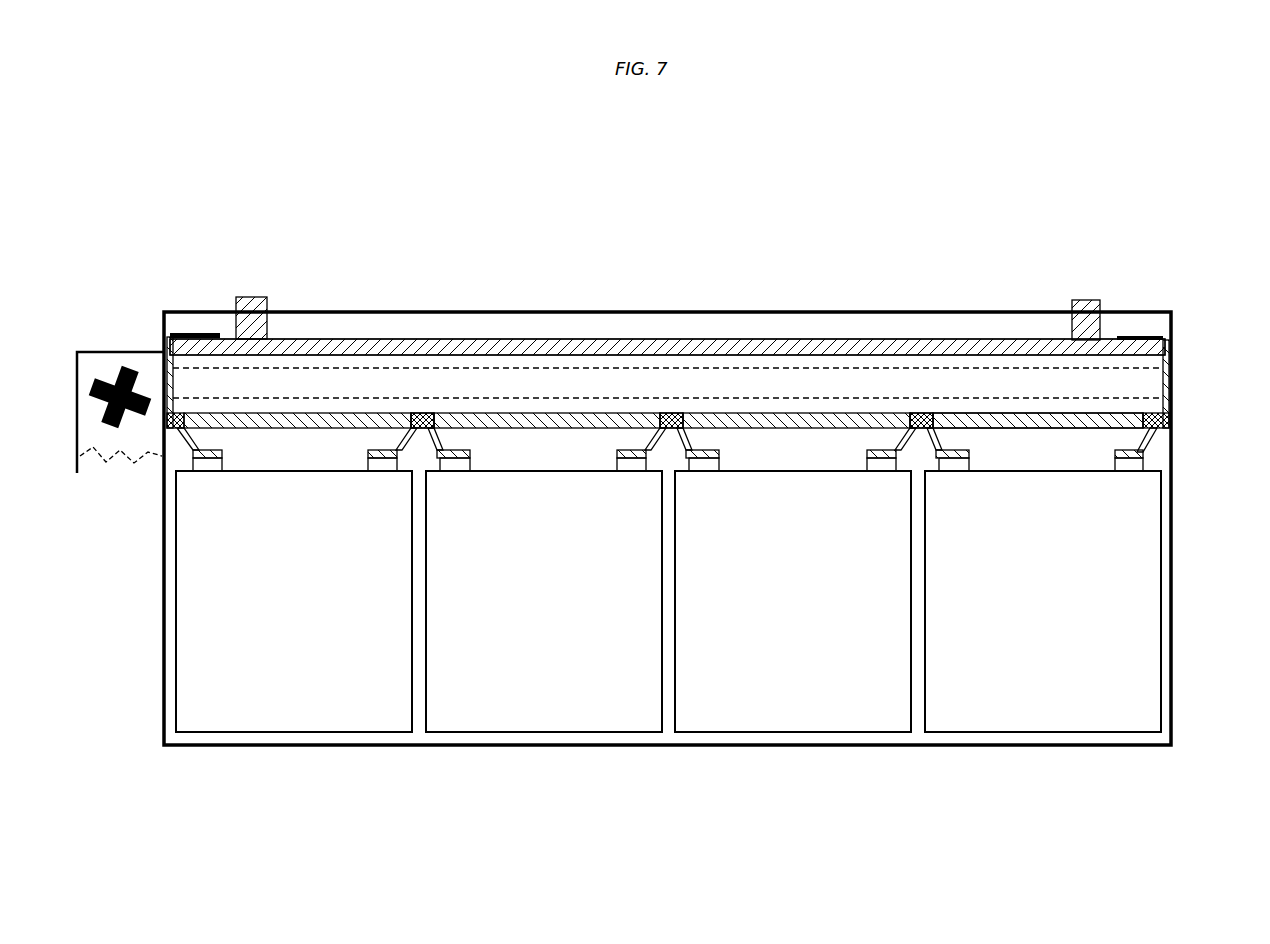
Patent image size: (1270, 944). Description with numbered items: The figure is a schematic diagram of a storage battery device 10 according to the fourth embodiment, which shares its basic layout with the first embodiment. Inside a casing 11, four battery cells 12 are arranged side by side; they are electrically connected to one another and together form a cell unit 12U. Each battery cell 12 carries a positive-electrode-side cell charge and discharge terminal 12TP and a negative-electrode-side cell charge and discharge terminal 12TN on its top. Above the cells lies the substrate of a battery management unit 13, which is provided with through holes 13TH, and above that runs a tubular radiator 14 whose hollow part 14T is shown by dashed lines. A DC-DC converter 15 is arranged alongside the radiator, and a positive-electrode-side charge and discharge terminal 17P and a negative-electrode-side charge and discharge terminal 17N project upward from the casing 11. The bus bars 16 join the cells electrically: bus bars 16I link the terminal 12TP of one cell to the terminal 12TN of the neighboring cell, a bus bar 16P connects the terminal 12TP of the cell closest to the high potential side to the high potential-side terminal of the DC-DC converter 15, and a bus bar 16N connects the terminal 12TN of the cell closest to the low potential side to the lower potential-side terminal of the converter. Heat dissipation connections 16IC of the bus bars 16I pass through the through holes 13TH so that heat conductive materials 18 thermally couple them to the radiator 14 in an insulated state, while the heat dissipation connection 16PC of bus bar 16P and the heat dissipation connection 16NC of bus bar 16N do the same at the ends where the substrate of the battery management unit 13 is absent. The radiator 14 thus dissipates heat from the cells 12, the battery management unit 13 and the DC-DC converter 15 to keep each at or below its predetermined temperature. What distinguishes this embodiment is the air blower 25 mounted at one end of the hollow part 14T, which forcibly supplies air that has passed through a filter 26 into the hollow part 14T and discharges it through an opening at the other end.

The storage battery device 10 is at (670, 174).
The casing 11 is at (605, 312).
The battery cells 12 is at (293, 710).
The positive-electrode-side cell charge and discharge terminal 12TP is at (217, 462).
The negative-electrode-side cell charge and discharge terminal 12TN is at (370, 463).
The cell unit 12U is at (667, 797).
The battery management unit 13 is at (1067, 430).
The through holes 13TH is at (399, 413).
The radiator 14 is at (334, 357).
The hollow part 14T is at (540, 388).
The DC-DC converter 15 is at (805, 345).
The bus bars 16 is at (711, 322).
The bus bar 16P is at (173, 410).
The heat dissipation connection 16PC is at (207, 410).
The bus bars 16I is at (448, 418).
The heat dissipation connections 16IC is at (437, 412).
The bus bar 16N is at (1166, 400).
The heat dissipation connection 16NC is at (1157, 440).
The positive-electrode-side charge and discharge terminal 17P is at (252, 297).
The negative-electrode-side charge and discharge terminal 17N is at (1095, 300).
The heat conductive materials 18 is at (200, 333).
The air blower 25 is at (118, 372).
The filter 26 is at (104, 464).